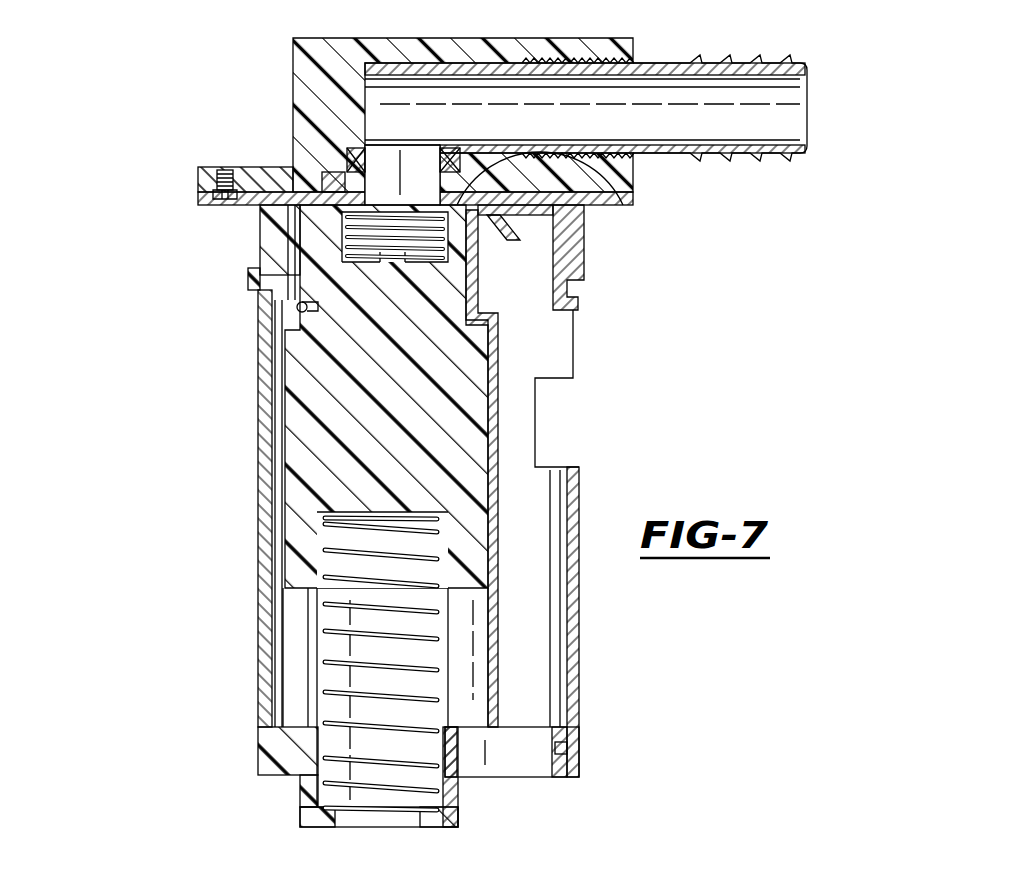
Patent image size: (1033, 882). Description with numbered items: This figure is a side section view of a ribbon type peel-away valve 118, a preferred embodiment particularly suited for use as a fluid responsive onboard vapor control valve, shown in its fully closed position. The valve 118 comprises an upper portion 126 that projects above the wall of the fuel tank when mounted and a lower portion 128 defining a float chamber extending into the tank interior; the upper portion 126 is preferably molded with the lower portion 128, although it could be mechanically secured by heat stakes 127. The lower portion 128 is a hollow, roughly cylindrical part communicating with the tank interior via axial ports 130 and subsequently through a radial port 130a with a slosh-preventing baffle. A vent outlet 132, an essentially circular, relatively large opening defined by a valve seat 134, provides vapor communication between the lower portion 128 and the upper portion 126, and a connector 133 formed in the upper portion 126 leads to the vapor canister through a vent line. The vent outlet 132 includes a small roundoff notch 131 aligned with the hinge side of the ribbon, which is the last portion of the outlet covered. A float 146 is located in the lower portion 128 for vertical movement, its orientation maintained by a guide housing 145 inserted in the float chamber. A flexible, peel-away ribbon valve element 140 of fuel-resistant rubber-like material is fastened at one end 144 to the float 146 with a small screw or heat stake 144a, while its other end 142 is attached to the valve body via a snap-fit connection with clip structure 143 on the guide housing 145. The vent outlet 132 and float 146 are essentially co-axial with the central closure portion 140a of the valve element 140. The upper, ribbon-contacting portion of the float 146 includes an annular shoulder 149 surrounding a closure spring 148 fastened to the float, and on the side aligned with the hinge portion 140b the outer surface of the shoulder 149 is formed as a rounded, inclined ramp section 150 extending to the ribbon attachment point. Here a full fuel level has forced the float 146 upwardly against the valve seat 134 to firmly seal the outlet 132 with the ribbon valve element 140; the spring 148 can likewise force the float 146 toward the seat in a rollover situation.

The ribbon type peel-away valve 118 is at (210, 143).
The upper portion 126 is at (293, 82).
The heat stakes 127 is at (212, 208).
The lower portion 128 is at (258, 250).
The axial ports 130 is at (518, 762).
The radial port 130a is at (536, 440).
The roundoff notch 131 is at (300, 240).
The vent outlet 132 is at (455, 152).
The connector 133 is at (722, 62).
The valve seat 134 is at (308, 172).
The ribbon valve element 140 is at (386, 182).
The central closure portion 140a is at (285, 297).
The hinge portion 140b is at (552, 162).
The other end 142 is at (592, 205).
The clip structure 143 is at (580, 262).
The one end 144 is at (283, 355).
The small screw or heat stake 144a is at (315, 340).
The guide housing 145 is at (497, 650).
The float 146 is at (288, 490).
The closure spring 148 is at (480, 305).
The annular shoulder 149 is at (503, 222).
The ramp section 150 is at (283, 305).